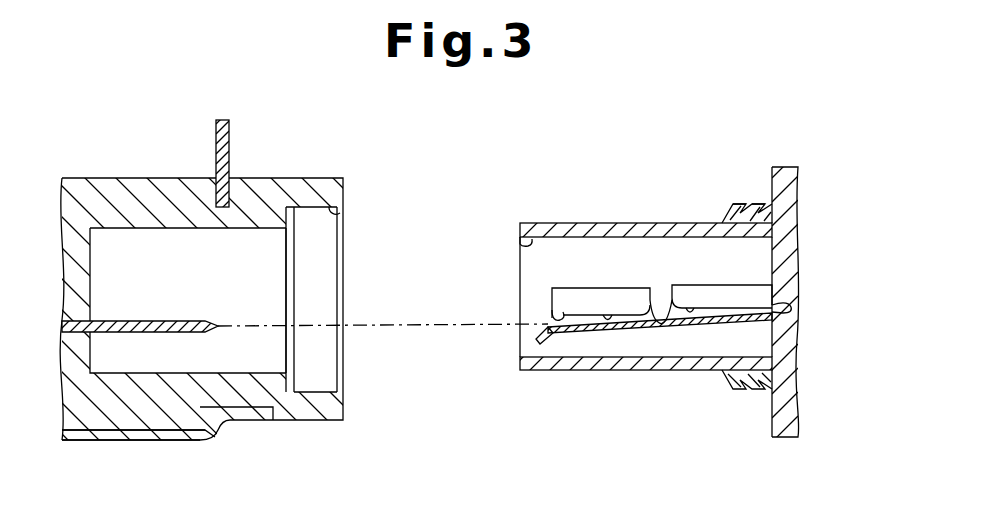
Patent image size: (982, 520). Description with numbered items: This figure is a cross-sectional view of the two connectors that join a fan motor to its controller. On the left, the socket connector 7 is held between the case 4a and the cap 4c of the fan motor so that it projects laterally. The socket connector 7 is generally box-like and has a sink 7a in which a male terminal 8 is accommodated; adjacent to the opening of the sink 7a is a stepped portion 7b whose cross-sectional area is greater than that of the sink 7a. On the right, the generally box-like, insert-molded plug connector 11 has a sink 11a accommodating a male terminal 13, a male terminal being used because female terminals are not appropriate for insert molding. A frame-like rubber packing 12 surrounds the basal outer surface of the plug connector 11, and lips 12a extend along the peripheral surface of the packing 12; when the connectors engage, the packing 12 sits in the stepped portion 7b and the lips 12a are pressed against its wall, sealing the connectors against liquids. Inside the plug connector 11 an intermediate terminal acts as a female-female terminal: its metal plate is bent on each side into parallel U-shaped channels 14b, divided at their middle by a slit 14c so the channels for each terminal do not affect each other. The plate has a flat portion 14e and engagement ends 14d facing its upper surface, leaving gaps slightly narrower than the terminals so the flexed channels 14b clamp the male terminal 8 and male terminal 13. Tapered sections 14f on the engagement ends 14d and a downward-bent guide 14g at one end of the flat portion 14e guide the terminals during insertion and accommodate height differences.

The case 4a is at (216, 124).
The cap 4c is at (150, 440).
The socket connector 7 is at (300, 178).
The sink 7a is at (238, 230).
The stepped portion 7b is at (340, 213).
The male terminal 8 is at (141, 321).
The plug connector 11 is at (562, 223).
The sink 11a is at (520, 240).
The rubber packing 12 is at (726, 206).
The lips 12a is at (757, 204).
The male terminal 13 is at (790, 312).
The U-shaped channels 14b is at (550, 290).
The slit 14c is at (662, 322).
The engagement ends 14d is at (609, 318).
The flat portion 14e is at (660, 336).
The tapered section 14f is at (563, 310).
The guide 14g is at (536, 340).